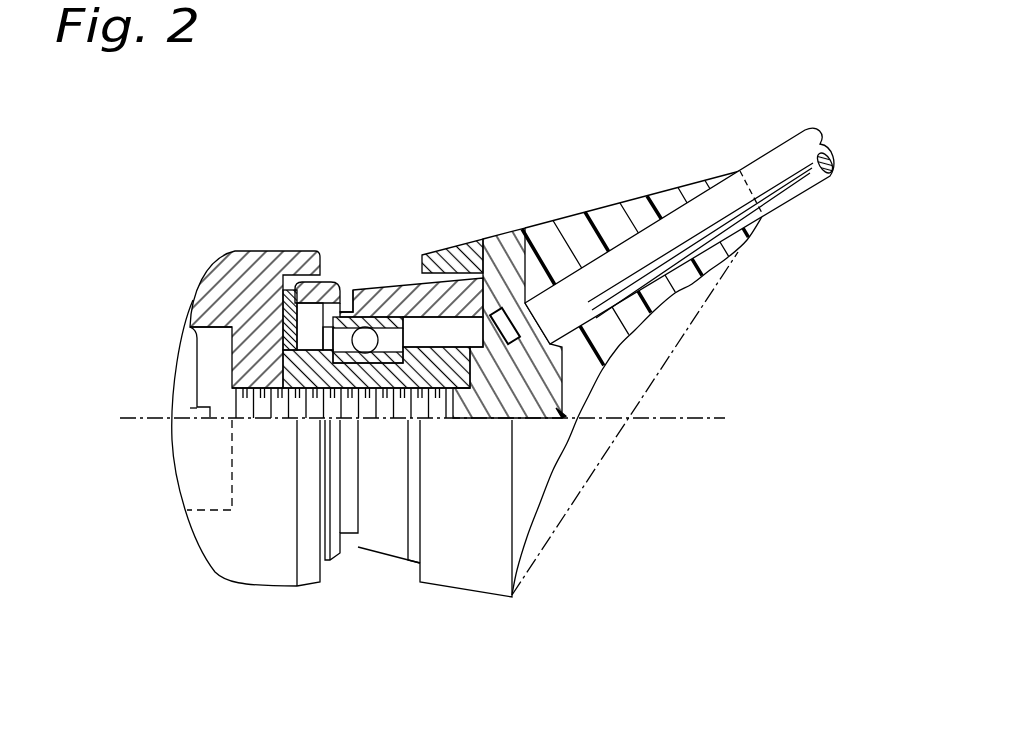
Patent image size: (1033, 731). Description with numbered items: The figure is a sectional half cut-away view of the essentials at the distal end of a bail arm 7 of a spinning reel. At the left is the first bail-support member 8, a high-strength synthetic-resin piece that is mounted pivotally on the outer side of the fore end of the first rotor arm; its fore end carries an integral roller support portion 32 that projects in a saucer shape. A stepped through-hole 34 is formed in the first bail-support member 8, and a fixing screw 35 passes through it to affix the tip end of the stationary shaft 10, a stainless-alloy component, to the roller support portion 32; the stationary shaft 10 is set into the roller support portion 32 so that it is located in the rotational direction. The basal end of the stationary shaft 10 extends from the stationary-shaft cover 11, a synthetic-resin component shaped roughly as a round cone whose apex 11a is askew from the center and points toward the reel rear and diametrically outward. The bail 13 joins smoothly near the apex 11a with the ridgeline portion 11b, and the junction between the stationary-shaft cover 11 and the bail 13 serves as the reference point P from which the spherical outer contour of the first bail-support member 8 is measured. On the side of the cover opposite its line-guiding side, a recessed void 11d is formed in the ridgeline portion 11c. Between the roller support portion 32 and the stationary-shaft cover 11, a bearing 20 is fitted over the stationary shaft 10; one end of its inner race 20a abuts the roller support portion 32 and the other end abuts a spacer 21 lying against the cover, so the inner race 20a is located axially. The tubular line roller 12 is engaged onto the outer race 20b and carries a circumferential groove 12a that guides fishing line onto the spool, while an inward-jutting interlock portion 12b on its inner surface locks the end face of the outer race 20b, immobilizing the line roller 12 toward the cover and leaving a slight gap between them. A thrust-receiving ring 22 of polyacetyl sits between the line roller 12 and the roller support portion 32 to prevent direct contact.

The bail arm 7 is at (546, 90).
The first bail-support member 8 is at (275, 252).
The stationary shaft 10 is at (402, 368).
The stationary-shaft cover 11 is at (548, 228).
The apex 11a is at (748, 250).
The ridgeline portion 11b is at (597, 230).
The ridgeline portion 11c is at (683, 342).
The recessed void 11d is at (585, 385).
The line roller 12 is at (388, 316).
The circumferential groove 12a is at (345, 290).
The interlock portion 12b is at (345, 352).
The bail 13 is at (767, 160).
The bearing 20 is at (407, 288).
The inner race 20a is at (395, 392).
The outer race 20b is at (352, 300).
The spacer 21 is at (498, 257).
The thrust-receiving ring 22 is at (283, 305).
The roller support portion 32 is at (257, 250).
The stepped through-hole 34 is at (180, 337).
The fixing screw 35 is at (212, 392).
The reference point P is at (763, 215).